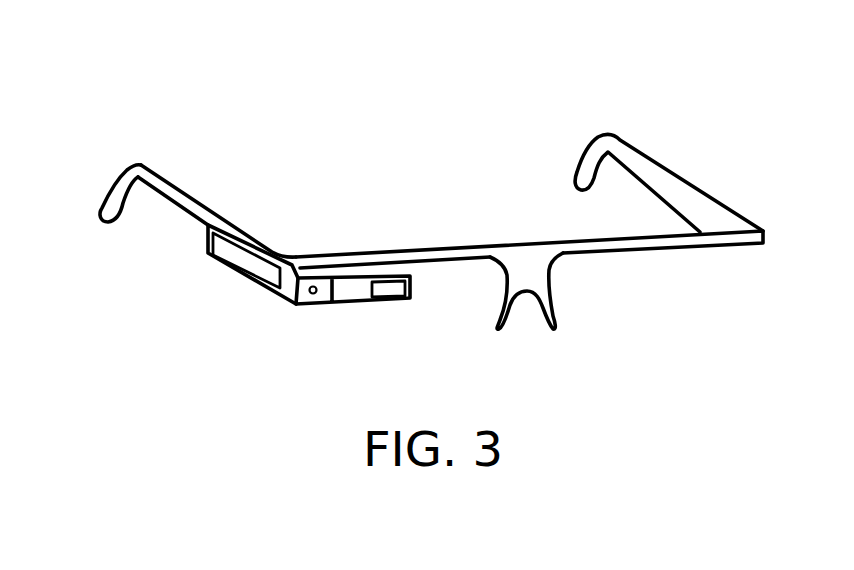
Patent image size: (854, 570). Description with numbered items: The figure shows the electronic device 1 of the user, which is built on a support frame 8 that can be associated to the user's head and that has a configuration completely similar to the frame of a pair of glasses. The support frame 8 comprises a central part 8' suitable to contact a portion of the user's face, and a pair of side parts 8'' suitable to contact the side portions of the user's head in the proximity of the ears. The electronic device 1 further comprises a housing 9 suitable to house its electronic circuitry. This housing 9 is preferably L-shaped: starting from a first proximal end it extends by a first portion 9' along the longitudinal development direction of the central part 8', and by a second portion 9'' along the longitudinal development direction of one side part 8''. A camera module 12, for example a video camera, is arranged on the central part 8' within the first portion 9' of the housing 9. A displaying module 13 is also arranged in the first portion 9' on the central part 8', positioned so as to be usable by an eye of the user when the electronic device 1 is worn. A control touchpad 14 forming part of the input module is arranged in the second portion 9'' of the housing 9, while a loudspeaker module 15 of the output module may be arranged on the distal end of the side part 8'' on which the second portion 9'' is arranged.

The electronic device 1 is at (289, 107).
The support frame 8 is at (582, 292).
The central part 8' is at (529, 240).
The side parts 8'' is at (412, 197).
The housing 9 is at (294, 261).
The first portion 9' is at (360, 269).
The second portion 9'' is at (240, 240).
The camera module 12 is at (314, 295).
The displaying module 13 is at (391, 293).
The control touchpad 14 is at (247, 264).
The loudspeaker module 15 is at (108, 226).